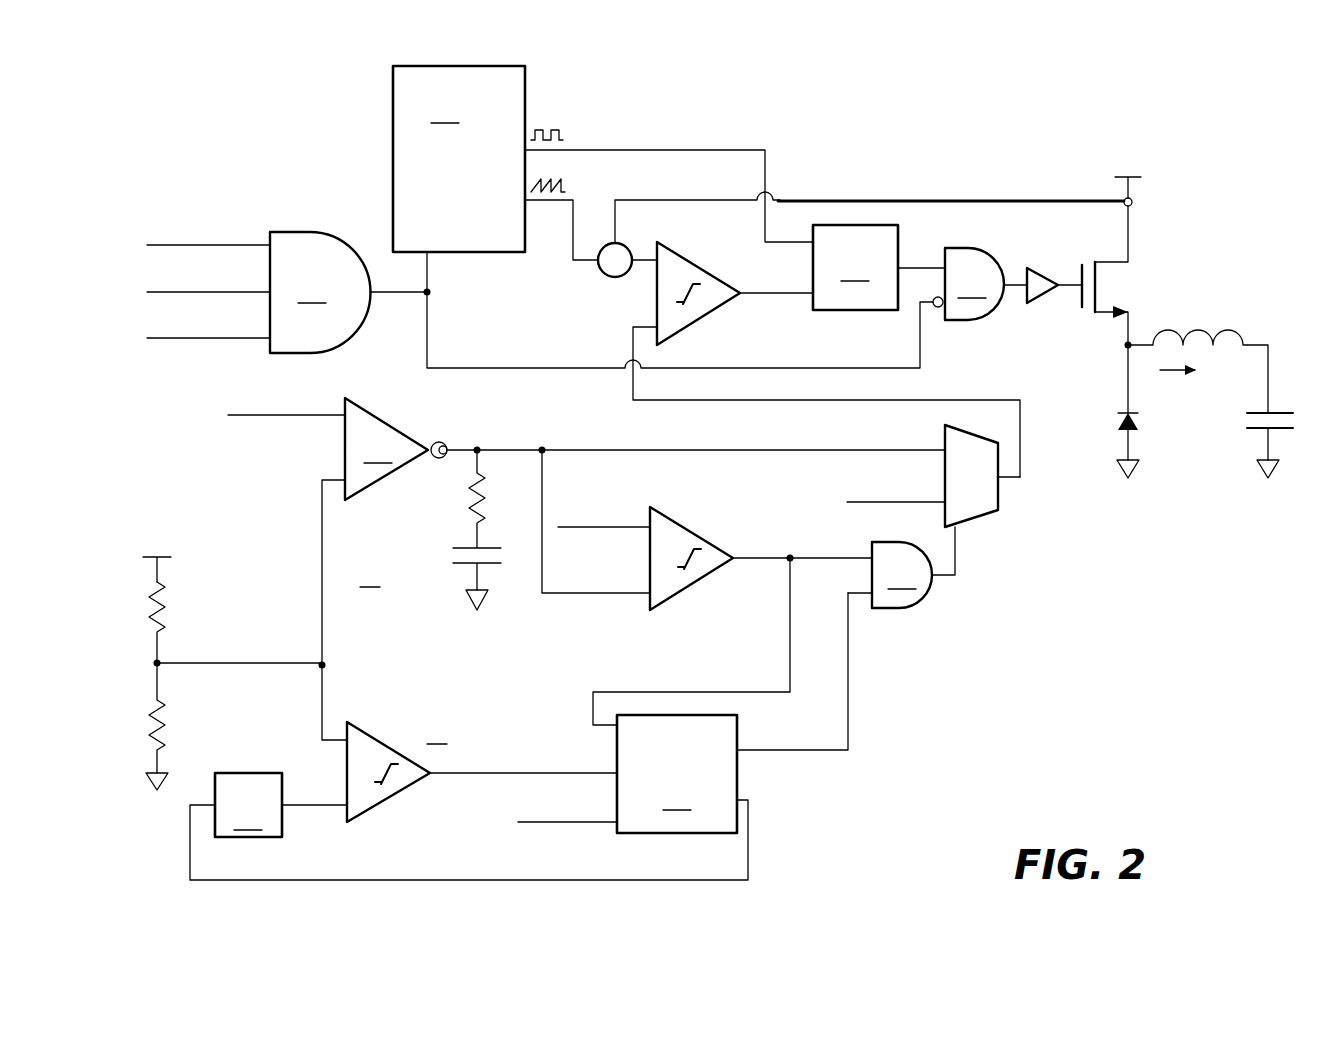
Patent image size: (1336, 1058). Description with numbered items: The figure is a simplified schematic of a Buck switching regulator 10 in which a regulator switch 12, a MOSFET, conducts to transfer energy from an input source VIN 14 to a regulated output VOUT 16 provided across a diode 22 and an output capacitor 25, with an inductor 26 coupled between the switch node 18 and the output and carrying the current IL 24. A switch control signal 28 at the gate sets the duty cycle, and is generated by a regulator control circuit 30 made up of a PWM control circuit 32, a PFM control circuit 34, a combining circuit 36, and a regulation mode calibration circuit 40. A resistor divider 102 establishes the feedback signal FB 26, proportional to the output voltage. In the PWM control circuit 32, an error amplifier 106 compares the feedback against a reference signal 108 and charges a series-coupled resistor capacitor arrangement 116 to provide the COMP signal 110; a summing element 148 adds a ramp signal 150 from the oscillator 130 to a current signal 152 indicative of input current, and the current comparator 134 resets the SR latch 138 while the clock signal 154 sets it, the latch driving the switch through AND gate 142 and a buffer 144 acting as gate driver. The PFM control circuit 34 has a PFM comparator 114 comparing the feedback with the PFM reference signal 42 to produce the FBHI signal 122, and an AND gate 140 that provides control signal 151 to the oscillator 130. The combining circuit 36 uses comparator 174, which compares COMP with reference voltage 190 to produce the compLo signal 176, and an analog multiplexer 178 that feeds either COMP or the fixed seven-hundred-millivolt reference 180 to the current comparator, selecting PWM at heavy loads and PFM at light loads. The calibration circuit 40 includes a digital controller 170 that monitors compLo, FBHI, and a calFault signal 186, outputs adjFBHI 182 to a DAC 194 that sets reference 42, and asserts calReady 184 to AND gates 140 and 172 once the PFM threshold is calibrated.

The regulator 10 is at (206, 123).
The regulator switch 12 is at (1113, 288).
The input source VIN 14 is at (1127, 179).
The regulated output VOUT 16 is at (712, 447).
The switch node 18 is at (1125, 343).
The diode 22 is at (1121, 418).
The current IL 24 is at (1196, 381).
The output capacitor 25 is at (1246, 423).
The inductor / feedback signal FB 26 is at (1207, 333).
The switch control signal 28 is at (1063, 284).
The regulator control circuit 30 is at (808, 134).
The PWM control circuit 32 is at (377, 565).
The PFM control circuit 34 is at (418, 772).
The combining circuit 36 is at (1088, 489).
The regulation mode calibration circuit 40 is at (908, 711).
The PFM reference signal 42 is at (305, 804).
The resistor divider 102 is at (128, 665).
The error amplifier 106 is at (383, 569).
The reference signal 108 is at (228, 420).
The COMP signal 110 is at (696, 509).
The PFM comparator 114 is at (410, 795).
The series-coupled resistor capacitor arrangement 116 is at (434, 539).
The FBHI signal 122 is at (159, 245).
The oscillator 130 is at (479, 159).
The current comparator 134 is at (702, 321).
The SR latch 138 is at (879, 267).
The AND gate 140 is at (348, 292).
The AND gate 142 is at (980, 284).
The buffer 144 is at (1046, 304).
The summing element 148 is at (605, 279).
The ramp signal 150 is at (546, 204).
The control signal 151 is at (430, 300).
The current signal 152 is at (900, 200).
The clock signal 154 is at (668, 150).
The digital controller 170 is at (677, 774).
The AND gate 172 is at (890, 575).
The comparator 174 is at (700, 583).
The compLo signal 176 is at (159, 292).
The analog multiplexer 178 is at (1002, 499).
The 700 mV reference 180 is at (856, 500).
The adjFBHI signal 182 is at (469, 840).
The calReady signal 184 is at (159, 338).
The calFault signal 186 is at (591, 825).
The reference voltage 190 is at (605, 530).
The DAC 194 is at (248, 805).